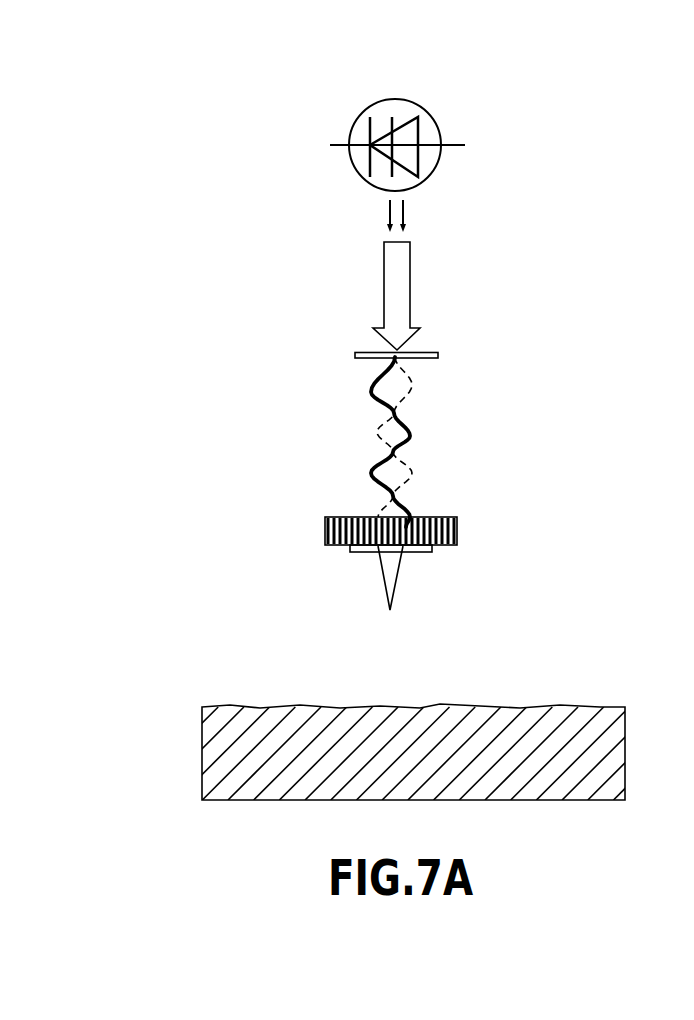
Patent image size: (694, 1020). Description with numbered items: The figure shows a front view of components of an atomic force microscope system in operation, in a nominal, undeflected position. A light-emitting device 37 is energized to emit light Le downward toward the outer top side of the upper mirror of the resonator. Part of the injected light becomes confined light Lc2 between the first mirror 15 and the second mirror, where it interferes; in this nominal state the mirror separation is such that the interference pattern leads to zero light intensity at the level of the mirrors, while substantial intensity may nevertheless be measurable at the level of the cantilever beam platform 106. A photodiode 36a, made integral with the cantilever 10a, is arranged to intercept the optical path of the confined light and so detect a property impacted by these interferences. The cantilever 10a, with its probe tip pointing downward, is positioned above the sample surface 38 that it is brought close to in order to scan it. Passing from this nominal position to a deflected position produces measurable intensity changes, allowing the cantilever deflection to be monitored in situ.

The light-emitting device 37 is at (402, 110).
The emitted light Le is at (410, 285).
The confined light Lc2 is at (412, 393).
The photodiode 36a is at (323, 533).
The cantilever beam platform 106 is at (417, 575).
The cantilever 10a is at (336, 575).
The first mirror 15 is at (433, 550).
The sample surface 38 is at (593, 732).